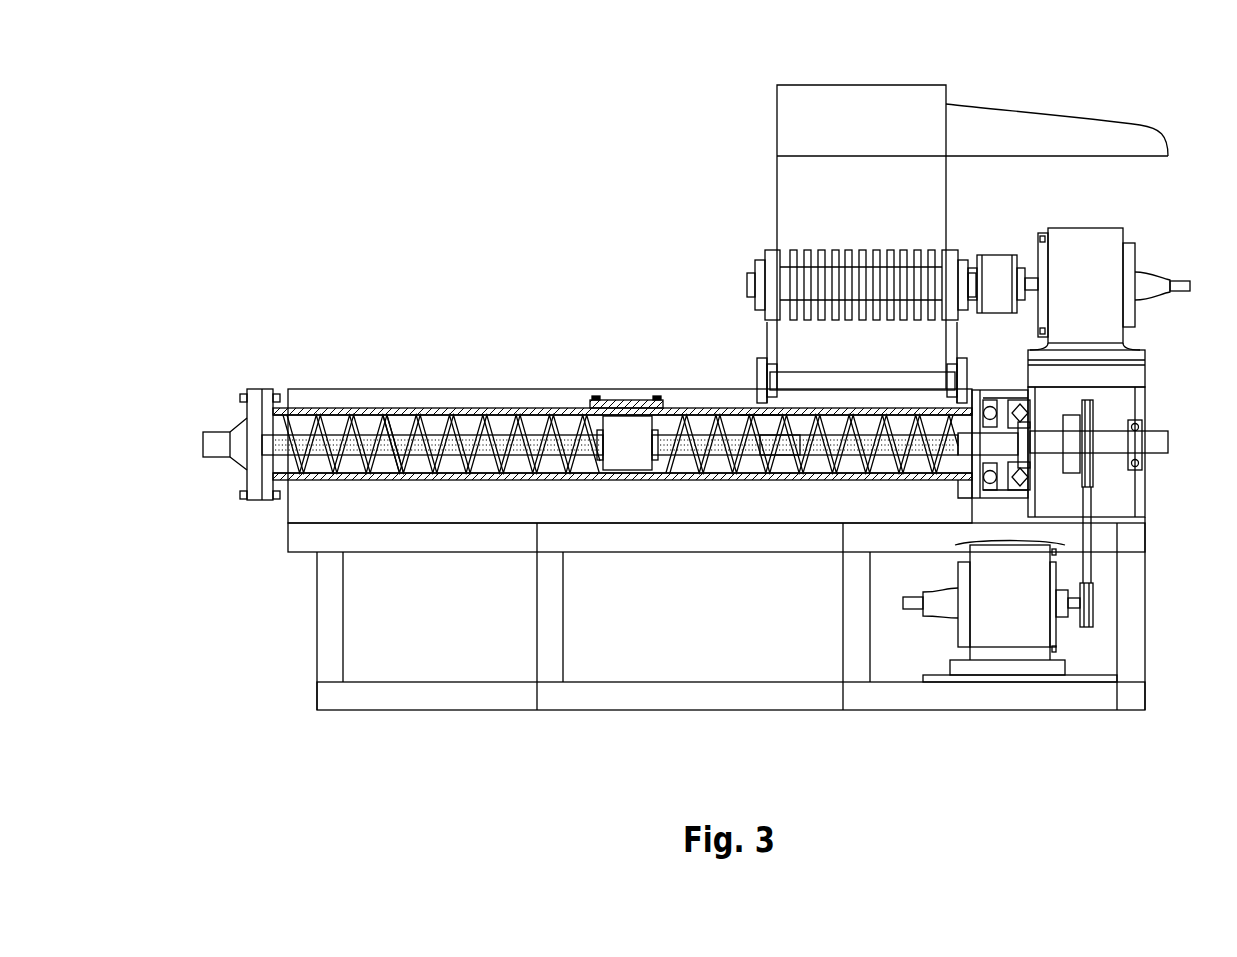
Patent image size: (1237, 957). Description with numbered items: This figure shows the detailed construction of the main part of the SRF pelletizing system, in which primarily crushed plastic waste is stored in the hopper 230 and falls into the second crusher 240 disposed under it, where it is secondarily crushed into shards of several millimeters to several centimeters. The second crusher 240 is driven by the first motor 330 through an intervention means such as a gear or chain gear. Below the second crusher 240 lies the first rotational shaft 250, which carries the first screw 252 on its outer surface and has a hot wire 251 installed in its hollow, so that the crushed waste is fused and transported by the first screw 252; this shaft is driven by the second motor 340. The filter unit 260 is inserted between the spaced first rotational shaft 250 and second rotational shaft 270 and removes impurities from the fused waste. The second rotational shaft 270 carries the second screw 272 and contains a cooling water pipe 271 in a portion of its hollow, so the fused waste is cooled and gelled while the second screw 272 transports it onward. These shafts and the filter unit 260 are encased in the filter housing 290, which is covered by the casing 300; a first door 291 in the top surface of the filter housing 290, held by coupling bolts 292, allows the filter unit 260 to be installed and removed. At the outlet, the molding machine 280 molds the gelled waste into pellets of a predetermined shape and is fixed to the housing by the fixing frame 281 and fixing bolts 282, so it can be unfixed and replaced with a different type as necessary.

The hopper 230 is at (860, 95).
The second crusher 240 is at (762, 283).
The first rotational shaft 250 is at (808, 470).
The hot wire 251 is at (752, 415).
The first screw 252 is at (772, 478).
The filter unit 260 is at (638, 470).
The second rotational shaft 270 is at (448, 456).
The cooling water pipe 271 is at (530, 412).
The second screw 272 is at (405, 470).
The molding machine 280 is at (207, 420).
The fixing frame 281 is at (258, 392).
The fixing bolts 282 is at (242, 397).
The filter housing 290 is at (437, 410).
The first door 291 is at (638, 402).
The coupling bolts 292 is at (598, 397).
The casing 300 is at (360, 390).
The first motor 330 is at (1085, 240).
The second motor 340 is at (1010, 640).